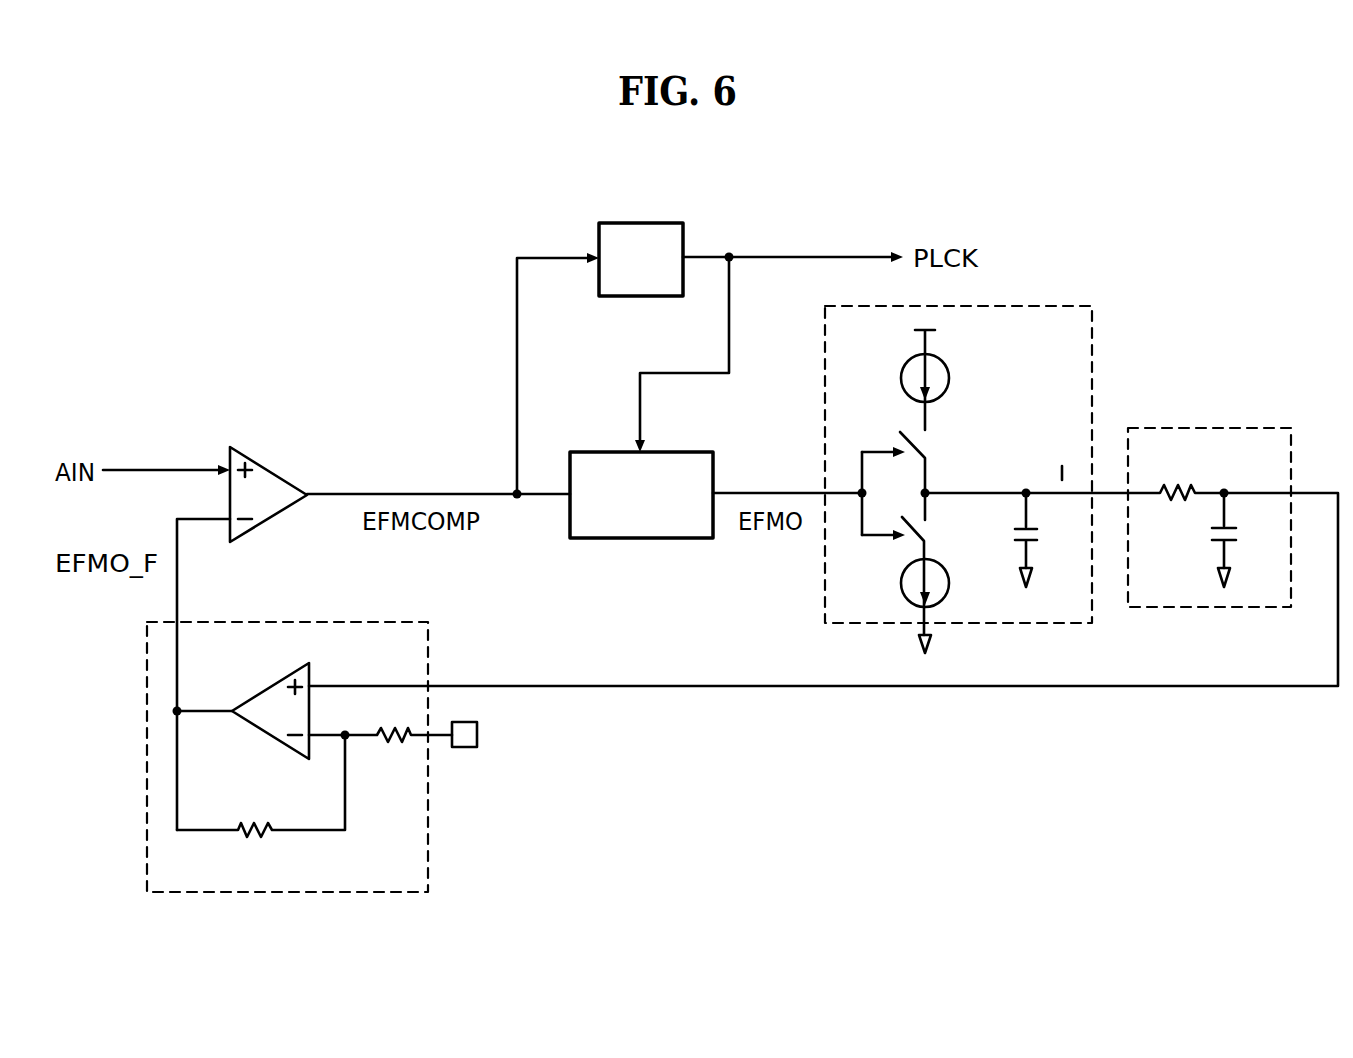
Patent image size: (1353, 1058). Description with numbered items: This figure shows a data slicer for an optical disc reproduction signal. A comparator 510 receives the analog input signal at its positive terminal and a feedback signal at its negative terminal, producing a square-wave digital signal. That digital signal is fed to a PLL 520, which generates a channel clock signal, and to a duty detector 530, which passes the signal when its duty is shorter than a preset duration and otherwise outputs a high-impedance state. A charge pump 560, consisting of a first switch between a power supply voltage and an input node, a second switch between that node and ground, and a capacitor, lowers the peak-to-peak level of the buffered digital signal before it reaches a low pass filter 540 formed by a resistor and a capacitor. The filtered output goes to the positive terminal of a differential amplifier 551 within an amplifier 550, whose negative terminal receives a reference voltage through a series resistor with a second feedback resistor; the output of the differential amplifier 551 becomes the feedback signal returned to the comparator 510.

The comparator 510 is at (272, 468).
The phase locked loop (PLL) 520 is at (648, 222).
The duty detector 530 is at (668, 452).
The low pass filter 540 is at (1205, 428).
The amplifier 550 is at (321, 740).
The differential amplifier 551 is at (268, 686).
The charge pump 560 is at (1012, 304).